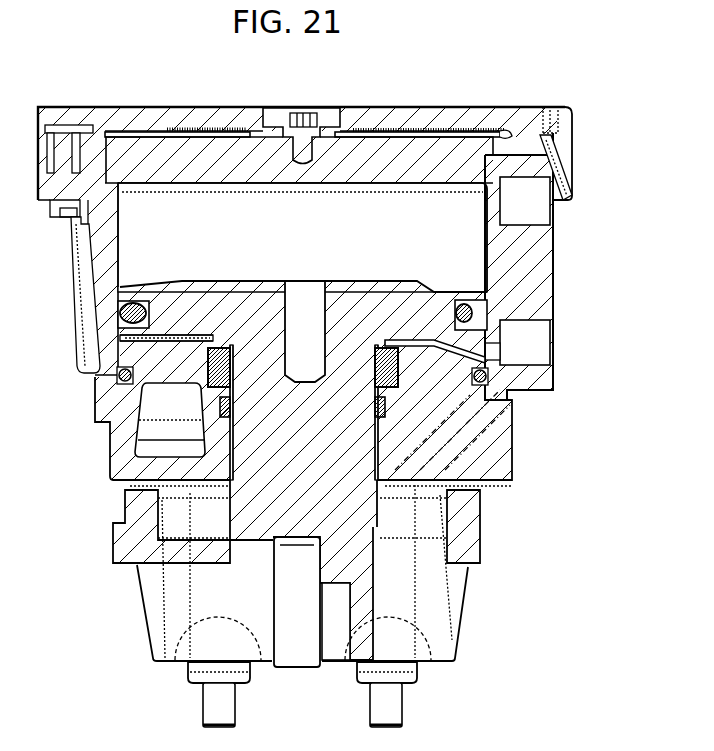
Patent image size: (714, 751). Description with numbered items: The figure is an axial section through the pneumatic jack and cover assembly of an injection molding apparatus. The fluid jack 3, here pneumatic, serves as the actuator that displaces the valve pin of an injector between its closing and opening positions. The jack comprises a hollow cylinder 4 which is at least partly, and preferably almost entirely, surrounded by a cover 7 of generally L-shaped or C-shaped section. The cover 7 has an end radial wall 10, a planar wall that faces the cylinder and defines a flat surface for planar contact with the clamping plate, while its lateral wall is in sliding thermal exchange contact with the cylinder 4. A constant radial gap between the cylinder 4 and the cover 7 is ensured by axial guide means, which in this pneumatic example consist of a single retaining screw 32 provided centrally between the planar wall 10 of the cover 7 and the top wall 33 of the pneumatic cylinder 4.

The radial wall 10 is at (157, 106).
The retaining screw 32 is at (318, 106).
The top wall 33 is at (384, 160).
The cover 7 is at (572, 155).
The cylinder 4 is at (120, 252).
The fluid jack 3 is at (556, 294).